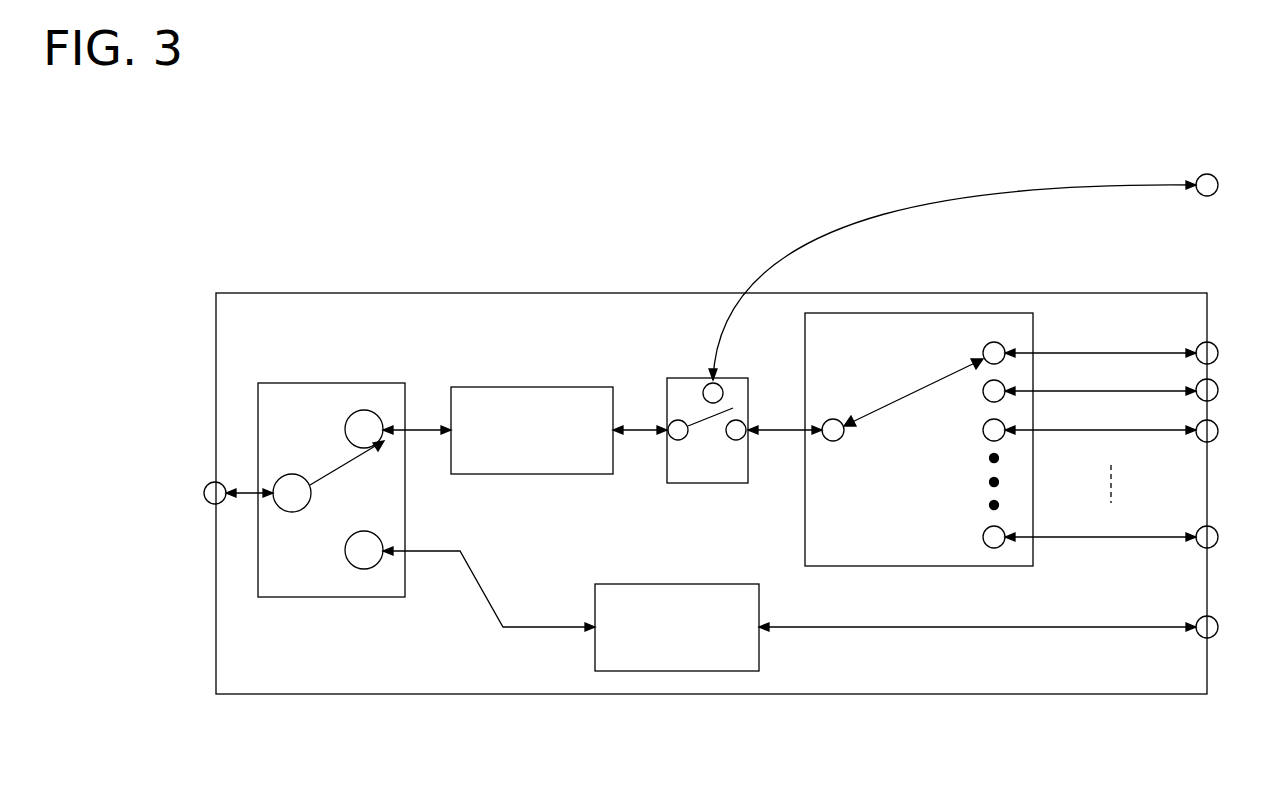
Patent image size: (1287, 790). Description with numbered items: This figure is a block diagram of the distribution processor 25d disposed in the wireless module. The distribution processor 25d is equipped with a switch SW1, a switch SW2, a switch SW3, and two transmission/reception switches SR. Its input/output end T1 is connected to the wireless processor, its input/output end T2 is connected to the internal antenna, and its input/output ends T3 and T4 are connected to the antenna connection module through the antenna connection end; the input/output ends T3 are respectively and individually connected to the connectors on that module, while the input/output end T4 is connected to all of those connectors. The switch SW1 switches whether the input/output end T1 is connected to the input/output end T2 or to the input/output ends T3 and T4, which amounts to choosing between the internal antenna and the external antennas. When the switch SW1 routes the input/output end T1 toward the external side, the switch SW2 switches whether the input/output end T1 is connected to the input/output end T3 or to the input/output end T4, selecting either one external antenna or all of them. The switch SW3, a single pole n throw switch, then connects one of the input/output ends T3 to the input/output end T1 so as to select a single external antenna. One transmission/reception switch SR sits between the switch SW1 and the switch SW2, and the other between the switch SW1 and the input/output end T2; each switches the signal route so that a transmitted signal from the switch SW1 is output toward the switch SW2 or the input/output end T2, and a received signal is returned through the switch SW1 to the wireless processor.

The distribution processor 25d is at (572, 293).
The switch SW1 is at (334, 383).
The switch SW2 is at (745, 378).
The switch SW3 is at (920, 313).
The transmission/reception switch SR is at (564, 387).
The input/output end T1 is at (208, 485).
The input/output end T2 is at (1218, 626).
The input/output ends T3 is at (1223, 333).
The input/output end T4 is at (1205, 177).